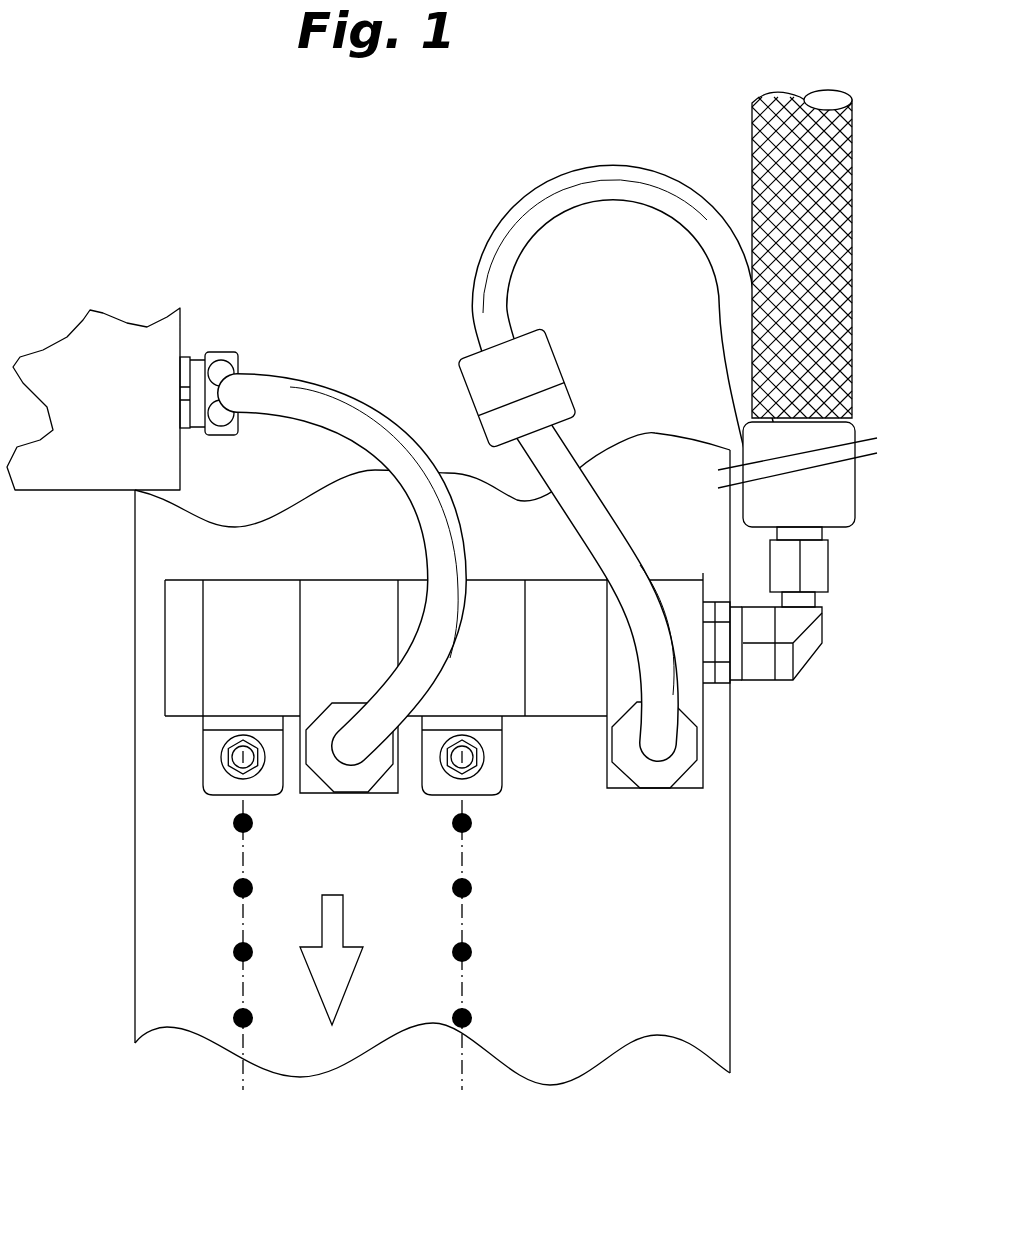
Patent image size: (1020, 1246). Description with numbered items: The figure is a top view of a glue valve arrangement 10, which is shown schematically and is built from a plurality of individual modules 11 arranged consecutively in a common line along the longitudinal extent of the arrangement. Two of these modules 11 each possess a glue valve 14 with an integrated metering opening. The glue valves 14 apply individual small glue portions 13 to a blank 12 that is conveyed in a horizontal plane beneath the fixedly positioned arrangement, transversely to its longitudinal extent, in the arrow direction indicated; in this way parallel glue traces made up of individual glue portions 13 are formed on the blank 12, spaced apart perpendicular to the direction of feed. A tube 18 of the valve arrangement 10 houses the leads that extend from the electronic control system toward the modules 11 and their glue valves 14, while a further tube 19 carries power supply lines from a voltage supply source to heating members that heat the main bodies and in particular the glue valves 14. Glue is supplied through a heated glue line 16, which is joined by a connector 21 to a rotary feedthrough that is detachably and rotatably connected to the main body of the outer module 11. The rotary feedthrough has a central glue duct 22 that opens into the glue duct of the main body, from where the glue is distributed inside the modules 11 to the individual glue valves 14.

The glue valve arrangement 10 is at (467, 790).
The individual module 11 is at (353, 603).
The blank 12 is at (675, 908).
The glue portion 13 is at (233, 1017).
The glue valve 14 is at (440, 790).
The heated glue line 16 is at (820, 300).
The tube 18 is at (322, 398).
The further tube 19 is at (507, 250).
The connector 21 is at (822, 497).
The central glue duct 22 is at (822, 688).